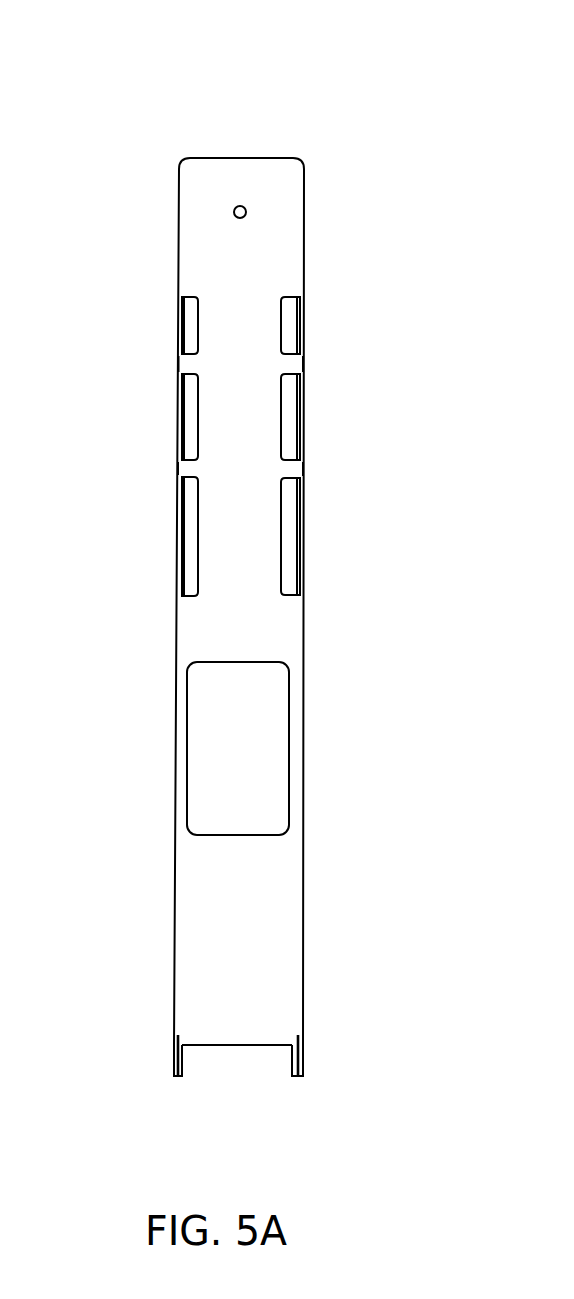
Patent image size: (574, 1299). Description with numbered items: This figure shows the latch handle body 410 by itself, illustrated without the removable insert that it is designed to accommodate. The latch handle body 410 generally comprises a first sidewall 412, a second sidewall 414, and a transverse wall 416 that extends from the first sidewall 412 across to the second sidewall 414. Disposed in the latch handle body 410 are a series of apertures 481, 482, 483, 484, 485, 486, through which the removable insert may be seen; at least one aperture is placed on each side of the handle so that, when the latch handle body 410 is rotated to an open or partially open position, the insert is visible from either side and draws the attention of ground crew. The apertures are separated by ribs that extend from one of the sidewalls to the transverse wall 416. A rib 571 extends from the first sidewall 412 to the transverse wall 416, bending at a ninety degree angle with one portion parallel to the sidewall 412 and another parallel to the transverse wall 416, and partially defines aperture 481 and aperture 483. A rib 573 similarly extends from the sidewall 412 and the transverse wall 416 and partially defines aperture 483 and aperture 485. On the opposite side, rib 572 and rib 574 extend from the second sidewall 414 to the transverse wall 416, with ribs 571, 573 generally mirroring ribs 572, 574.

The latch handle body 410 is at (237, 98).
The first sidewall 412 is at (178, 640).
The second sidewall 414 is at (303, 640).
The transverse wall 416 is at (259, 560).
The aperture 481 is at (184, 555).
The aperture 482 is at (297, 565).
The aperture 483 is at (184, 422).
The aperture 484 is at (297, 423).
The aperture 485 is at (184, 322).
The aperture 486 is at (297, 322).
The rib 571 is at (186, 470).
The rib 572 is at (291, 473).
The rib 573 is at (186, 365).
The rib 574 is at (292, 365).